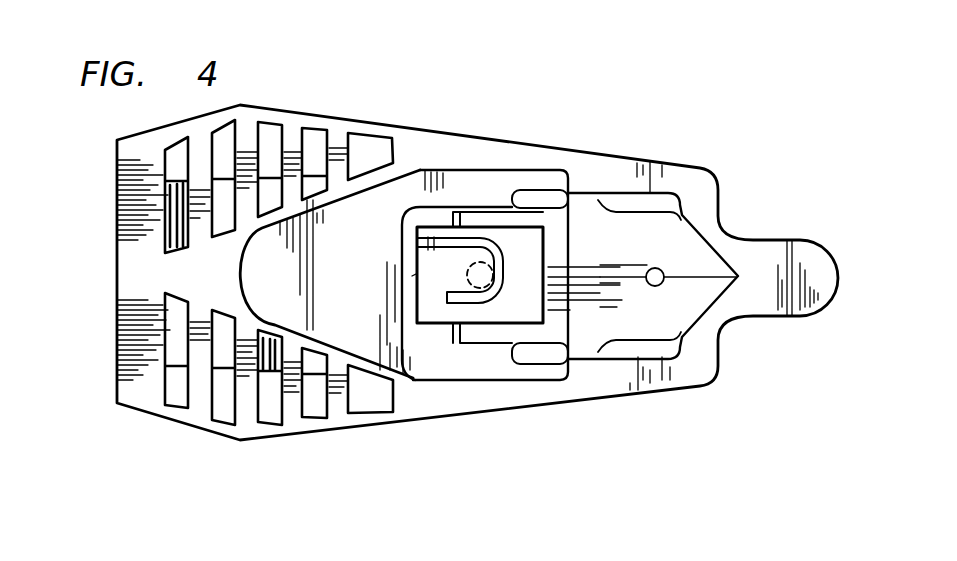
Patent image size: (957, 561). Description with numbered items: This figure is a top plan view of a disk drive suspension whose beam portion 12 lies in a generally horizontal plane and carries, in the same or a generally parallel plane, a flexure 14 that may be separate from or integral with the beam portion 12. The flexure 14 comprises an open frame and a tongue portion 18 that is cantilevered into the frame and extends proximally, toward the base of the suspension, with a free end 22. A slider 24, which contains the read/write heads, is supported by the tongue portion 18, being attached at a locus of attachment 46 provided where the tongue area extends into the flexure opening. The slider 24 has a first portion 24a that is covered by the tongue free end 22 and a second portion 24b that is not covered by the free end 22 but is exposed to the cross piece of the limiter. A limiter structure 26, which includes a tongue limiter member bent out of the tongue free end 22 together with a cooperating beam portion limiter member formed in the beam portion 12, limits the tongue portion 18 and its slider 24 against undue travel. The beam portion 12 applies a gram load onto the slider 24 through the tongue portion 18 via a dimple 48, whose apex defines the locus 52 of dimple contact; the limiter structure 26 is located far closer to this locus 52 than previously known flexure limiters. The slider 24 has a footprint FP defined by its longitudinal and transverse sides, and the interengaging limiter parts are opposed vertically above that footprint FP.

The beam portion 12 is at (602, 193).
The flexure 14 is at (500, 140).
The tongue portion 18 is at (573, 230).
The free end 22 is at (492, 327).
The slider 24 is at (430, 307).
The first portion 24a is at (532, 228).
The second portion 24b is at (400, 238).
The limiter structure 26 is at (470, 206).
The locus of attachment 46 is at (401, 345).
The dimple 48 is at (486, 280).
The locus of dimple contact 52 is at (537, 322).
The footprint FP is at (412, 276).